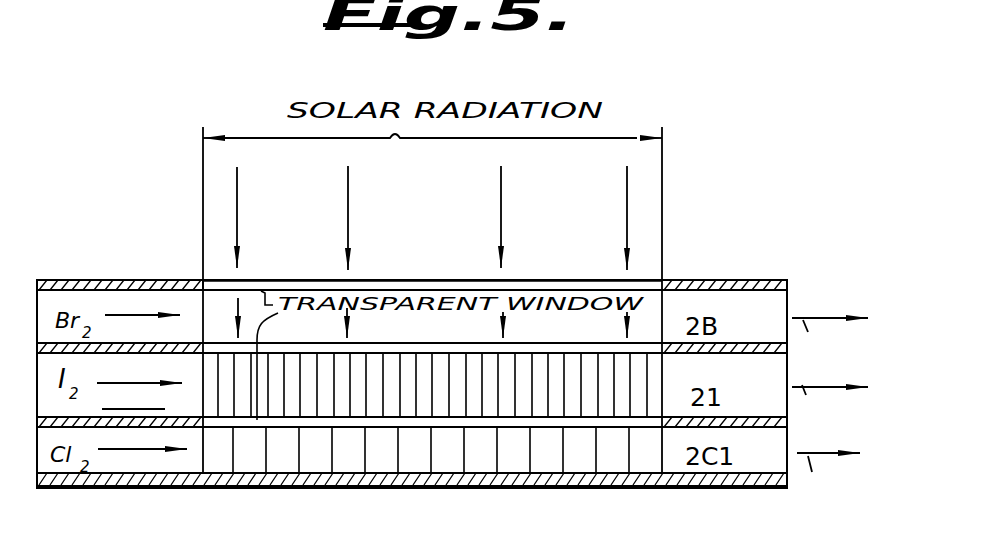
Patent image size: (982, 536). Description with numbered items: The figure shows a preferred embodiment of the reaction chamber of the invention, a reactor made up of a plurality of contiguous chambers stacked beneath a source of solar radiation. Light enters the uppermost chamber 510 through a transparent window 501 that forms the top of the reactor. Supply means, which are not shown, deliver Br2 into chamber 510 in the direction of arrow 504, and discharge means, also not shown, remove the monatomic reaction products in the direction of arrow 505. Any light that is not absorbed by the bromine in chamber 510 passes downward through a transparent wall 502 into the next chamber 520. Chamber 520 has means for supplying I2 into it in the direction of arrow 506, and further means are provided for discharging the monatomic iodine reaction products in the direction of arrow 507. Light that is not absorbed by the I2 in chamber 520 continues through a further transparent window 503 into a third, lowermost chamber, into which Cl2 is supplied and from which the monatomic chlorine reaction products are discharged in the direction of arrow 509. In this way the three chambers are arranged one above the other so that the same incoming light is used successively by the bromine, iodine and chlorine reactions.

The transparent window 501 is at (650, 281).
The transparent wall 502 is at (552, 340).
The transparent window 503 is at (650, 420).
The arrow 504 is at (132, 314).
The arrow 505 is at (830, 339).
The arrow 506 is at (159, 381).
The arrow 507 is at (147, 452).
The arrow 509 is at (819, 485).
The chamber 510 is at (190, 297).
The chamber 520 is at (133, 399).